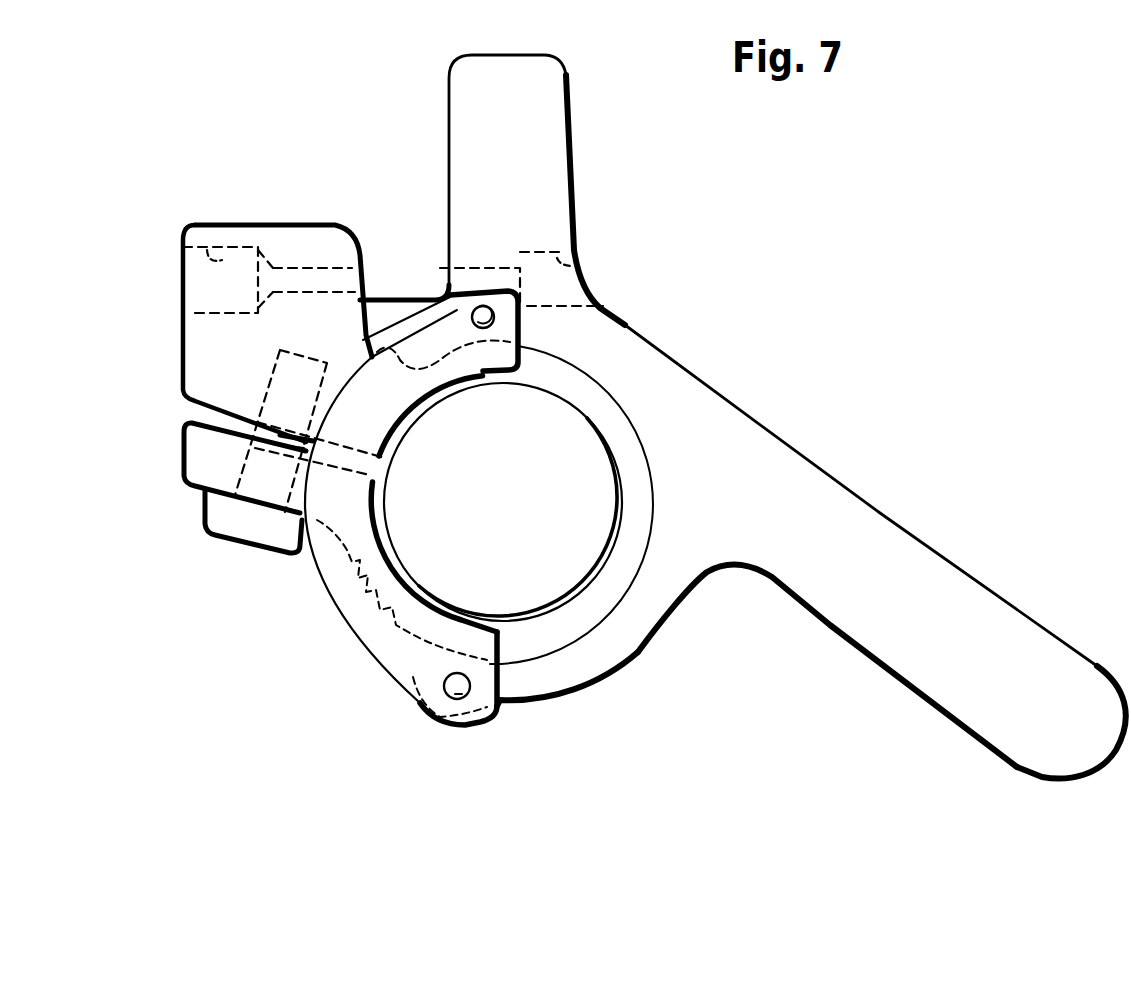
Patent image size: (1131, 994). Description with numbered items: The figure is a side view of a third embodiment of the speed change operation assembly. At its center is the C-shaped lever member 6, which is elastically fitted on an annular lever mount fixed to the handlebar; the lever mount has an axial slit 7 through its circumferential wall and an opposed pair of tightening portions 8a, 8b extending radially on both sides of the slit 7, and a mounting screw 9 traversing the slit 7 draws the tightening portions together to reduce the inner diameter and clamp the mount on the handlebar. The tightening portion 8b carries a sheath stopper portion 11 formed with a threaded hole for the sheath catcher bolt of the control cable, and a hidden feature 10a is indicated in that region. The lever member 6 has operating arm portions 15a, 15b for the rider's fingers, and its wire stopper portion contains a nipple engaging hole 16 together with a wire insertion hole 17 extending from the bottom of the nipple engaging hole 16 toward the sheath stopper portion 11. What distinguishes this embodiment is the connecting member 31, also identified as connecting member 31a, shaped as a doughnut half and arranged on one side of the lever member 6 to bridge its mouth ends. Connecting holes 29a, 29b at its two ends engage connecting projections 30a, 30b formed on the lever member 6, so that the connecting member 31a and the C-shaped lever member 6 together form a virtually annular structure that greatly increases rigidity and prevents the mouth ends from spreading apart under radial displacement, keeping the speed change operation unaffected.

The lever member 6 is at (640, 655).
The axial slit 7 is at (200, 422).
The tightening portion 8a is at (182, 450).
The tightening portion 8b is at (182, 350).
The mounting screw 9 is at (242, 552).
The hidden boss 10a is at (207, 250).
The sheath stopper portion 11 is at (282, 224).
The operating arm portion 15a is at (924, 703).
The operating arm portion 15b is at (512, 54).
The nipple engaging hole 16 is at (588, 262).
The wire insertion hole 17 is at (445, 285).
The connecting hole 29a is at (465, 700).
The connecting hole 29b is at (484, 330).
The connecting projection 30a is at (458, 720).
The connecting projection 30b is at (505, 322).
The connecting member 31 is at (390, 557).
The connecting member 31a is at (330, 603).